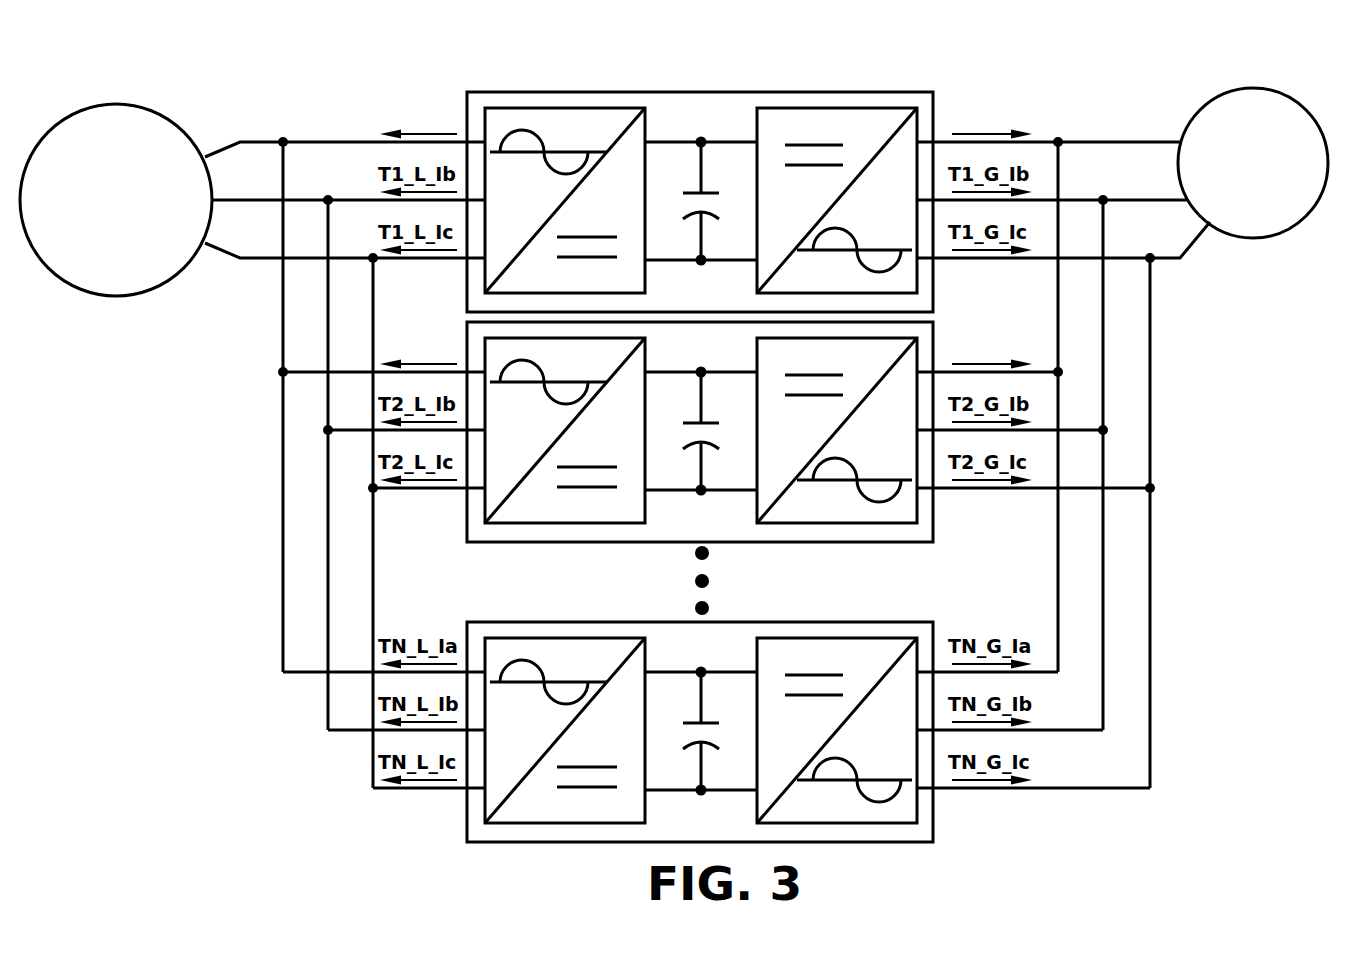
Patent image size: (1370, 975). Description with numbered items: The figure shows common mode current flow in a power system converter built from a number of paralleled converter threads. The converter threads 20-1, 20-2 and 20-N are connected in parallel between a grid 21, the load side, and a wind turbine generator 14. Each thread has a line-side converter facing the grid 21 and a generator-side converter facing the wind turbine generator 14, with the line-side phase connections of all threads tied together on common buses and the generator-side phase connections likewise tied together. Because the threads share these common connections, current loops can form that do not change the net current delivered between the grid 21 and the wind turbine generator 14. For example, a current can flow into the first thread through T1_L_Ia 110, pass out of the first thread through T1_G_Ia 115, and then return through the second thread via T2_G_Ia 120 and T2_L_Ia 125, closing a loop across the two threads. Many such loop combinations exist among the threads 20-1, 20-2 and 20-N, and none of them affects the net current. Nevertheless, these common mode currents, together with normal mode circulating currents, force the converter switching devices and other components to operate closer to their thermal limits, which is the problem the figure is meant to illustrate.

The wind turbine generator 14 is at (1290, 228).
The grid 21 is at (172, 283).
The converter thread 20-1 is at (937, 97).
The converter thread 20-2 is at (937, 325).
The converter thread 20-N is at (937, 815).
The thread T1_L_Ia 110 is at (425, 105).
The T1_G_Ia 115 is at (1005, 108).
The thread T2_G_Ia 120 is at (1005, 335).
The T2_L_Ia 125 is at (432, 340).